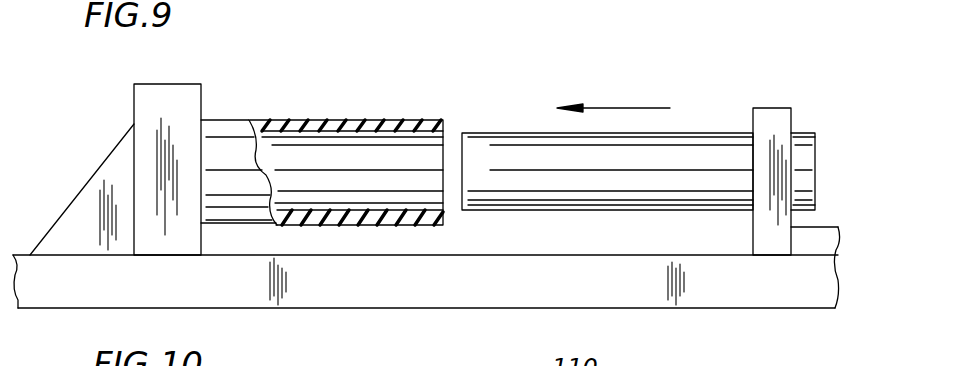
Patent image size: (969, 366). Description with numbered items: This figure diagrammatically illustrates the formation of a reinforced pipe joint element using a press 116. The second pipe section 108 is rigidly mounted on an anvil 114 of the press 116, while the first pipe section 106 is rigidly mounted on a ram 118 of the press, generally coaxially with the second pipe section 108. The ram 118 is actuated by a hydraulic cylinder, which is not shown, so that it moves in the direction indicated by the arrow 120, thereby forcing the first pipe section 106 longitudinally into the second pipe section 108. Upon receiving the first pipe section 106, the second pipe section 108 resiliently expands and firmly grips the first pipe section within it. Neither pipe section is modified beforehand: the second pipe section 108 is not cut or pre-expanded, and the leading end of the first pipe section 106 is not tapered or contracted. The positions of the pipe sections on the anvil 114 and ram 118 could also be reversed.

The first pipe section 106 is at (507, 133).
The second pipe section 108 is at (339, 120).
The anvil 114 is at (185, 108).
The press 116 is at (620, 323).
The ram 118 is at (775, 118).
The arrow 120 is at (616, 107).